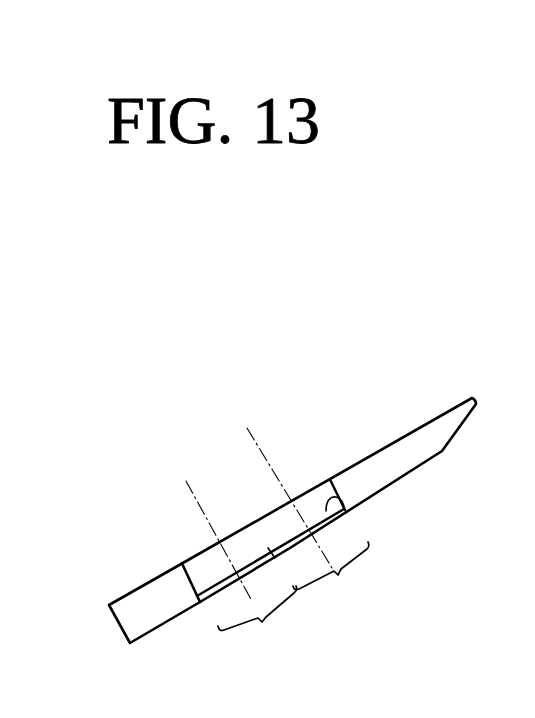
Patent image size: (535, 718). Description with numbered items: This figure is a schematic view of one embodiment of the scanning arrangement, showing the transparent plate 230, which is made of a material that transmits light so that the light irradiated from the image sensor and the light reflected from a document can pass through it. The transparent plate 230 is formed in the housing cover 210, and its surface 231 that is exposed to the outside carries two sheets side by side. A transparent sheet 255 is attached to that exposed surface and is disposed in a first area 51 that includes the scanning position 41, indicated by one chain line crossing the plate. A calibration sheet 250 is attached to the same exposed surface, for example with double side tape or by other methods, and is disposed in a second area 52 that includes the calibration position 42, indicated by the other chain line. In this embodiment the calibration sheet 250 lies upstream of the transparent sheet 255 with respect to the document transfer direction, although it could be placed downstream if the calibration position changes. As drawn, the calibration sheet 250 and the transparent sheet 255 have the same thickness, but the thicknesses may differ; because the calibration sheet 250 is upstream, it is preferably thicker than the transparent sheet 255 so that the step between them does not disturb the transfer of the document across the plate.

The housing cover 210 is at (122, 618).
The transparent plate 230 is at (306, 498).
The surface 231 is at (345, 510).
The calibration sheet 250 is at (198, 596).
The transparent sheet 255 is at (349, 514).
The scanning position 41 is at (247, 428).
The calibration position 42 is at (186, 481).
The first area 51 is at (331, 572).
The second area 52 is at (257, 617).